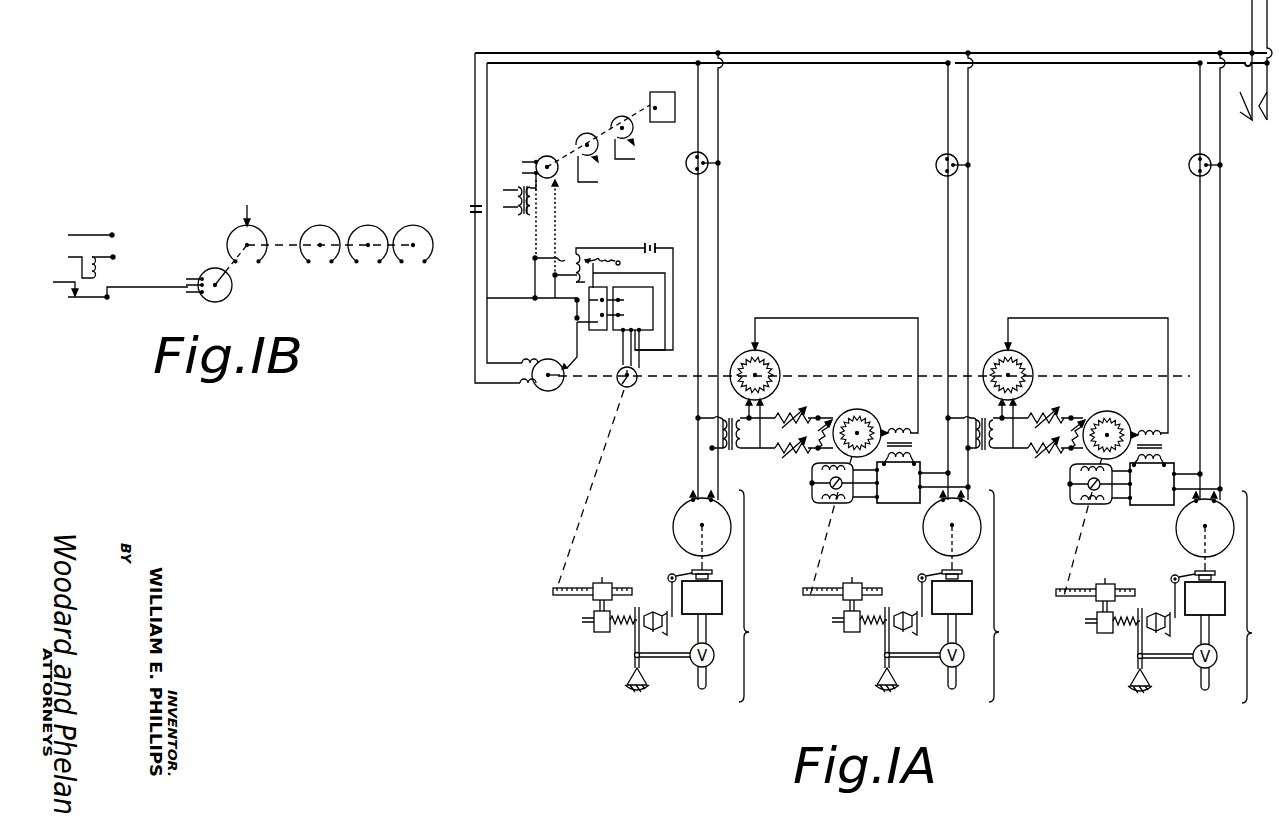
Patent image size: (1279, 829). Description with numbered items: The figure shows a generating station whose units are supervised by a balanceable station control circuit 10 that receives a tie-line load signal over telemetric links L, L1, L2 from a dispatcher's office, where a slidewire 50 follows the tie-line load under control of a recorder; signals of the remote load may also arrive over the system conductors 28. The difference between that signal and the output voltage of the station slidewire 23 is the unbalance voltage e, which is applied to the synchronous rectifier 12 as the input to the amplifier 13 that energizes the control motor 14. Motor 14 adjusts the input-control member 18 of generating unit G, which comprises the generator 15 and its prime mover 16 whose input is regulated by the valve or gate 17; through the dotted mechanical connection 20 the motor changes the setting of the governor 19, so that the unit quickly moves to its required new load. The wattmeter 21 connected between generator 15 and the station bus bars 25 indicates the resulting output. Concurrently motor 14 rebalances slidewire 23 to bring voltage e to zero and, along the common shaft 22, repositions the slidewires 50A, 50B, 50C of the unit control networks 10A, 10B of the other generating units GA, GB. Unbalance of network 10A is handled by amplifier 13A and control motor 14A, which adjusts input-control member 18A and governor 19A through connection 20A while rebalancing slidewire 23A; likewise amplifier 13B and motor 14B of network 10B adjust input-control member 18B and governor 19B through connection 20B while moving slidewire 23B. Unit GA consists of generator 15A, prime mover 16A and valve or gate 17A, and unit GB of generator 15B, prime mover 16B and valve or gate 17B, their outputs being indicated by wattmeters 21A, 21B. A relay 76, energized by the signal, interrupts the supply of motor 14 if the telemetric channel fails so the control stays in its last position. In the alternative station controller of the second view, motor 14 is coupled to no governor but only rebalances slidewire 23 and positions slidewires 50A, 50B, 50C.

In FIG. 1A, the balanceable electrical network 10 is at (532, 218).
In FIG. 1A, the balanceable control network 10A is at (862, 359).
In FIG. 1A, the balanceable control network 10B is at (1115, 355).
In FIG. 1A, the synchronous rectifier 12 is at (598, 330).
In FIG. 1A, the amplifier 13 is at (629, 306).
In FIG. 1A, the amplifier 13A is at (923, 482).
In FIG. 1A, the amplifier 13B is at (1176, 484).
In FIG. 1A, the control motor 14 is at (636, 382).
In FIG. 1B, the control motor 14 is at (232, 288).
In FIG. 1A, the control motor 14A is at (827, 483).
In FIG. 1A, the control motor 14B is at (1080, 484).
In FIG. 1A, the generator 15 is at (675, 516).
In FIG. 1A, the generator 15A is at (925, 527).
In FIG. 1A, the generator 15B is at (1178, 529).
In FIG. 1A, the prime mover 16 is at (702, 589).
In FIG. 1A, the prime mover 16A is at (952, 589).
In FIG. 1A, the prime mover 16B is at (1205, 590).
In FIG. 1A, the valve or gate 17 is at (712, 665).
In FIG. 1A, the valve or gate 17A is at (962, 665).
In FIG. 1A, the valve or gate 17B is at (1195, 666).
In FIG. 1A, the input-control member 18 is at (600, 630).
In FIG. 1A, the input-control member 18A is at (850, 630).
In FIG. 1A, the input-control member 18B is at (1103, 631).
In FIG. 1A, the governor 19 is at (622, 568).
In FIG. 1A, the governor 19A is at (882, 570).
In FIG. 1A, the governor 19B is at (1137, 573).
In FIG. 1A, the mechanical connection 20 is at (590, 484).
In FIG. 1A, the mechanical connection 20A is at (834, 534).
In FIG. 1A, the mechanical connection 20B is at (1078, 540).
In FIG. 1A, the wattmeter 21 is at (686, 170).
In FIG. 1A, the wattmeter 21A is at (936, 165).
In FIG. 1A, the wattmeter 21B is at (1189, 165).
In FIG. 1A, the shaft 22 is at (605, 378).
In FIG. 1A, the slidewire 23 is at (545, 392).
In FIG. 1B, the slidewire 23 is at (262, 232).
In FIG. 1A, the slidewire 23A is at (868, 413).
In FIG. 1A, the slidewire 23B is at (1130, 400).
In FIG. 1A, the station bus bars 25 is at (828, 73).
In FIG. 1A, the system conductors 28 is at (1256, 78).
In FIG. 1A, the slidewire 50 is at (589, 153).
In FIG. 1A, the slidewire 50A is at (770, 358).
In FIG. 1B, the slidewire 50A is at (323, 225).
In FIG. 1A, the slidewire 50B is at (1023, 358).
In FIG. 1B, the slidewire 50B is at (370, 225).
In FIG. 1A, the slidewire 50C is at (456, 219).
In FIG. 1B, the slidewire 50C is at (448, 226).
In FIG. 1A, the relay 76 is at (576, 254).
In FIG. 1B, the relay 76 is at (120, 266).
In FIG. 1A, the telemetric link L is at (525, 200).
In FIG. 1A, the telemetric link L1 is at (595, 164).
In FIG. 1A, the telemetric link L2 is at (631, 145).
In FIG. 1A, the unbalance voltage e is at (575, 307).
In FIG. 1A, the generating unit G is at (749, 596).
In FIG. 1A, the generating unit GA is at (1004, 596).
In FIG. 1A, the generating unit GB is at (1253, 597).